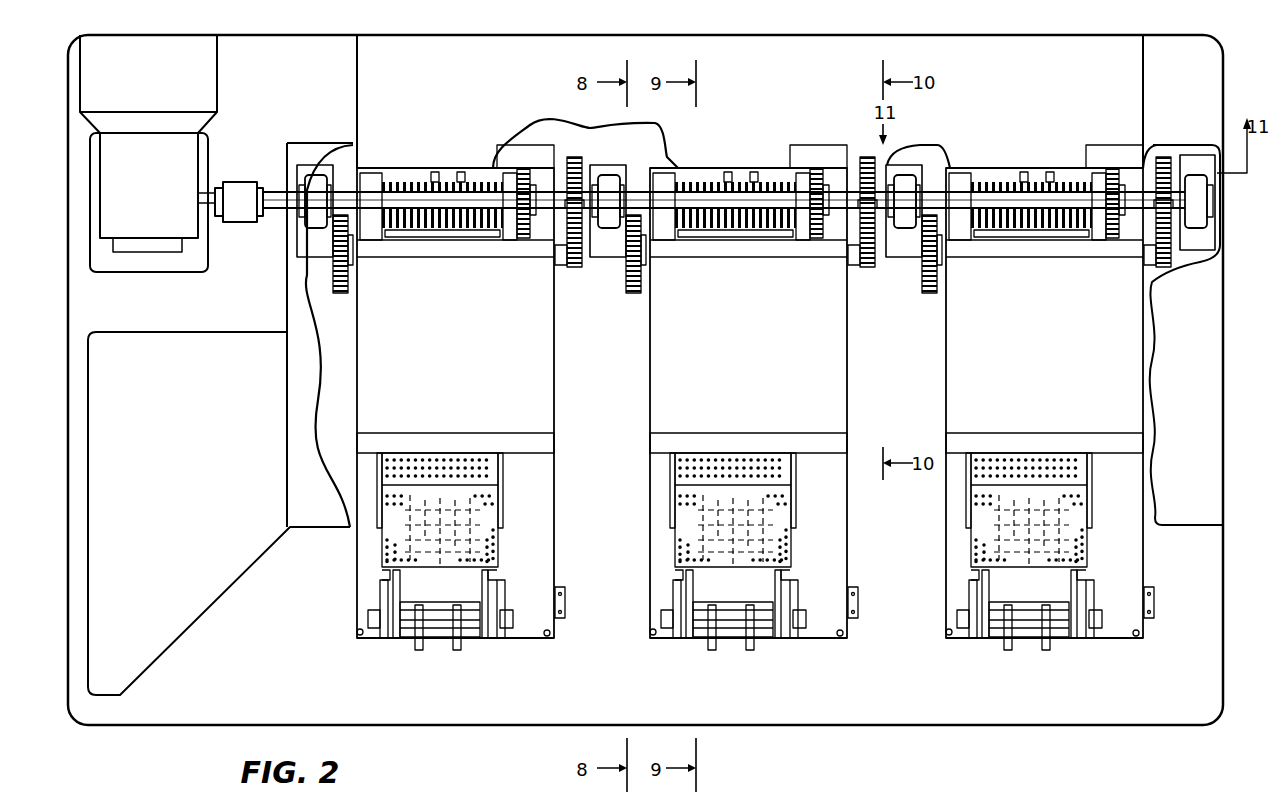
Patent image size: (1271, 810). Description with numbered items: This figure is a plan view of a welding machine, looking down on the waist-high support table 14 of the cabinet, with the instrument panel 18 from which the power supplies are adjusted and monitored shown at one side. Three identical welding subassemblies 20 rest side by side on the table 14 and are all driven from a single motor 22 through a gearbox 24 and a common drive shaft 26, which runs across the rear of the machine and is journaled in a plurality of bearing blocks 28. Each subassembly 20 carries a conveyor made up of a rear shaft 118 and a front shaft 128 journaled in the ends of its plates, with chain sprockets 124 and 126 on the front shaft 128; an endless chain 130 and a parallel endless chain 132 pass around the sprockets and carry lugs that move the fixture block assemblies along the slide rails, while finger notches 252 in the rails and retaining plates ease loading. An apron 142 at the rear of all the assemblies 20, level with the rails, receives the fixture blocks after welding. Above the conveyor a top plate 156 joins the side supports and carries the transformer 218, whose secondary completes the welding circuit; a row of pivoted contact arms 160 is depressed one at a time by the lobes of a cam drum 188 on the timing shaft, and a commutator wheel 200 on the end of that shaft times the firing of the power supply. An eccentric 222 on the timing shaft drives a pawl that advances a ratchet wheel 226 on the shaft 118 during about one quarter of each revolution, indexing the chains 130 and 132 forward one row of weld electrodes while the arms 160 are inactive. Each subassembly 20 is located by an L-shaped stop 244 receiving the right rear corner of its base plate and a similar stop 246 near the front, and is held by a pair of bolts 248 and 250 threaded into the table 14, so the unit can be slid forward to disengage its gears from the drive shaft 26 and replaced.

The support table 14 is at (155, 715).
The instrument panel 18 is at (195, 603).
The welding subassembly 20 is at (358, 643).
The motor 22 is at (207, 78).
The gearbox 24 is at (188, 163).
The drive shaft 26 is at (272, 212).
The bearing block 28 is at (313, 222).
The shaft 118 is at (812, 170).
The chain sprocket 124 is at (765, 640).
The chain sprocket 126 is at (707, 640).
The shaft 128 is at (740, 630).
The endless chain 130 is at (754, 172).
The endless chain 132 is at (726, 172).
The apron 142 is at (990, 99).
The top plate 156 is at (554, 448).
The contact arm 160 is at (441, 184).
The cam drum 188 is at (425, 238).
The commutator wheel 200 is at (346, 290).
The transformer 218 is at (458, 347).
The eccentric 222 is at (562, 266).
The ratchet wheel 226 is at (576, 156).
The L-shaped stop 244 is at (534, 143).
The stop 246 is at (565, 603).
The bolt 248 is at (357, 631).
The bolt 250 is at (545, 637).
The finger notch 252 is at (385, 578).